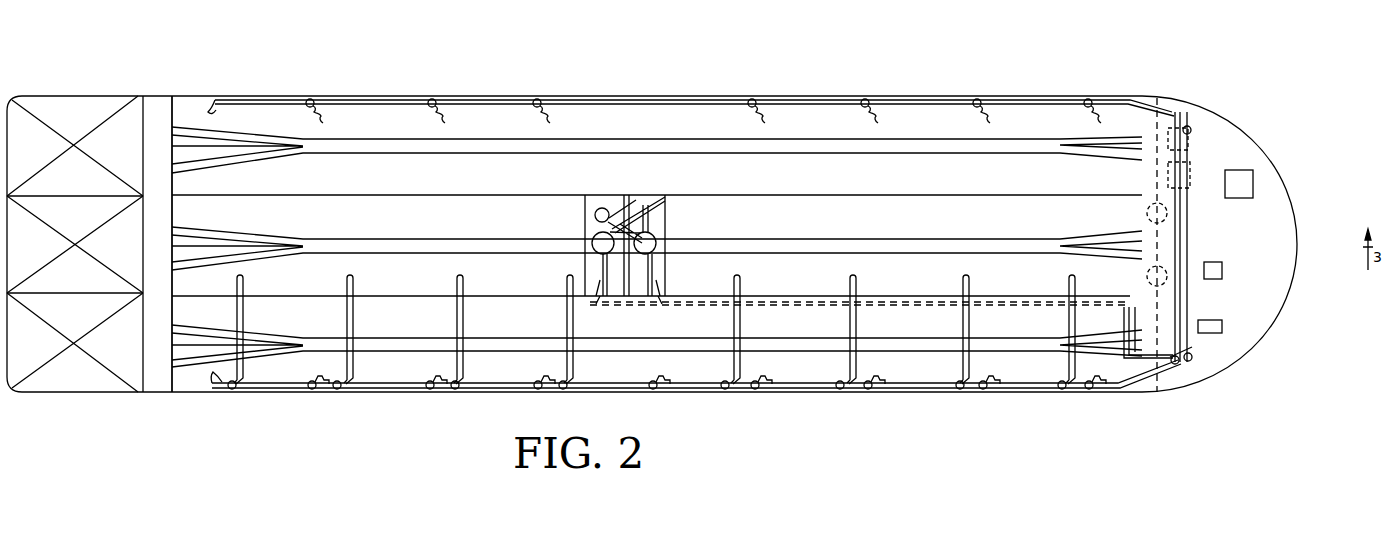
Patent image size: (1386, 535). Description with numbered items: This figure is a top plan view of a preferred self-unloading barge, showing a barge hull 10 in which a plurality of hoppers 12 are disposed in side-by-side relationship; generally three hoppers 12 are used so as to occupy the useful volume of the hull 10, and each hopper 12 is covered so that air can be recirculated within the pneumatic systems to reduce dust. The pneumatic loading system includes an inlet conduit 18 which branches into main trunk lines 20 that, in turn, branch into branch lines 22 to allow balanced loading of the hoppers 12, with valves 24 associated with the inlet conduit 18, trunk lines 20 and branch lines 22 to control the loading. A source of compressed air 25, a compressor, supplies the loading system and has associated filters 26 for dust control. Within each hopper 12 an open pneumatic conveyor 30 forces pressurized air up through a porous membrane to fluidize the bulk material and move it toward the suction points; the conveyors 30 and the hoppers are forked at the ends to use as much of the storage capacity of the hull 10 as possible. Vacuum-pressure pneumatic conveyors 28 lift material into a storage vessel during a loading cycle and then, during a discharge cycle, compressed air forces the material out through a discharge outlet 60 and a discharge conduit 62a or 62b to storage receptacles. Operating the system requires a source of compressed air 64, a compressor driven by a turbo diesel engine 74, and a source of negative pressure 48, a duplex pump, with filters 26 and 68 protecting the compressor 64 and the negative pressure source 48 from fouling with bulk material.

The barge hull 10 is at (1230, 118).
The hopper 12 is at (387, 113).
The inlet conduit 18 is at (1197, 342).
The main trunk line 20 is at (1132, 103).
The branch line 22 is at (222, 112).
The valve 24 is at (310, 99).
The source of compressed air 25 is at (1165, 100).
The filter 26 is at (1146, 213).
The vacuum-pressure pneumatic conveyor 28 is at (594, 237).
The open pneumatic conveyor 30 is at (347, 150).
The source of negative pressure 48 is at (1242, 170).
The discharge outlet 60 is at (600, 258).
The discharge conduit 62a is at (636, 296).
The discharge conduit 62b is at (600, 298).
The source of compressed air 64 is at (1190, 187).
The filter 68 is at (600, 208).
The turbo diesel engine 74 is at (1214, 320).